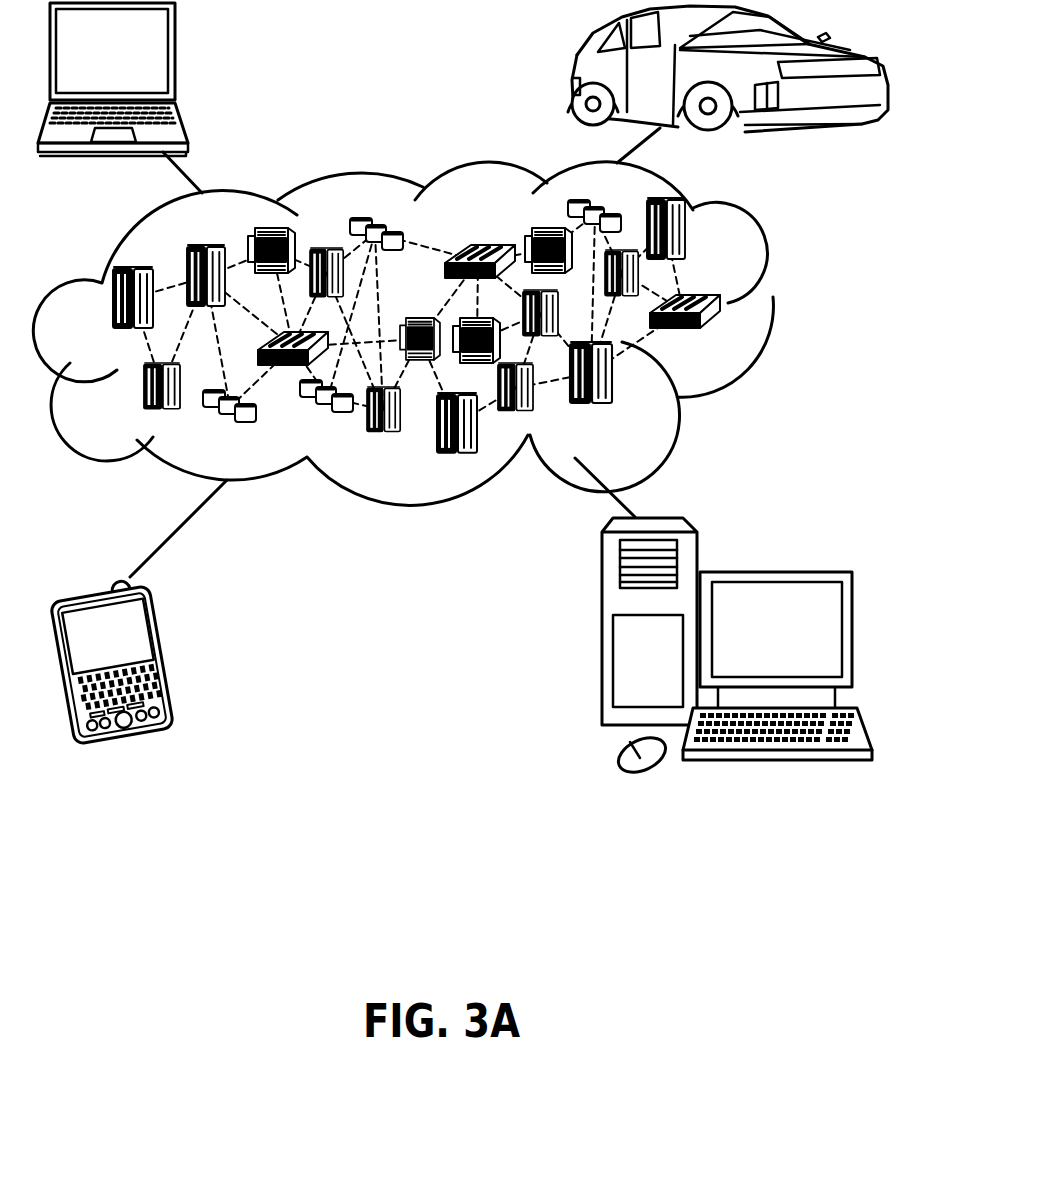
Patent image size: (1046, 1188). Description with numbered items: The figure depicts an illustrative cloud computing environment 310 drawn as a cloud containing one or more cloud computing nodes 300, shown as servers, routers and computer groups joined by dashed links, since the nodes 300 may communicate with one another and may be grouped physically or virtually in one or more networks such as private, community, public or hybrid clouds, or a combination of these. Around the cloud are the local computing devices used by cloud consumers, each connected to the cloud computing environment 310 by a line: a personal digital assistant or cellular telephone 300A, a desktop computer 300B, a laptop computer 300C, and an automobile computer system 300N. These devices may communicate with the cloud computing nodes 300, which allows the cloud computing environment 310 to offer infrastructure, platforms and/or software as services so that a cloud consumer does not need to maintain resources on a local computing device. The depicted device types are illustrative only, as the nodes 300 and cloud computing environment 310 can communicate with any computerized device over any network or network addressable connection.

The cloud computing nodes 300 is at (435, 334).
The cloud computing environment 310 is at (773, 307).
The personal digital assistant (PDA) or cellular telephone 300A is at (167, 653).
The desktop computer 300B is at (773, 572).
The laptop computer 300C is at (177, 58).
The automobile computer system 300N is at (575, 72).